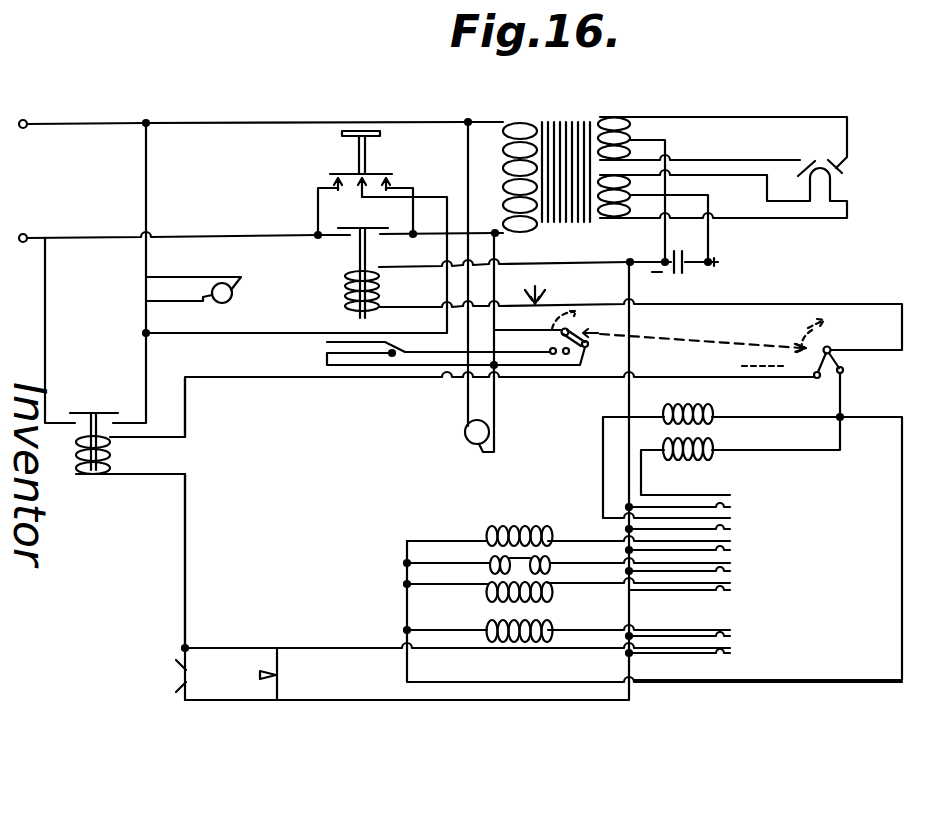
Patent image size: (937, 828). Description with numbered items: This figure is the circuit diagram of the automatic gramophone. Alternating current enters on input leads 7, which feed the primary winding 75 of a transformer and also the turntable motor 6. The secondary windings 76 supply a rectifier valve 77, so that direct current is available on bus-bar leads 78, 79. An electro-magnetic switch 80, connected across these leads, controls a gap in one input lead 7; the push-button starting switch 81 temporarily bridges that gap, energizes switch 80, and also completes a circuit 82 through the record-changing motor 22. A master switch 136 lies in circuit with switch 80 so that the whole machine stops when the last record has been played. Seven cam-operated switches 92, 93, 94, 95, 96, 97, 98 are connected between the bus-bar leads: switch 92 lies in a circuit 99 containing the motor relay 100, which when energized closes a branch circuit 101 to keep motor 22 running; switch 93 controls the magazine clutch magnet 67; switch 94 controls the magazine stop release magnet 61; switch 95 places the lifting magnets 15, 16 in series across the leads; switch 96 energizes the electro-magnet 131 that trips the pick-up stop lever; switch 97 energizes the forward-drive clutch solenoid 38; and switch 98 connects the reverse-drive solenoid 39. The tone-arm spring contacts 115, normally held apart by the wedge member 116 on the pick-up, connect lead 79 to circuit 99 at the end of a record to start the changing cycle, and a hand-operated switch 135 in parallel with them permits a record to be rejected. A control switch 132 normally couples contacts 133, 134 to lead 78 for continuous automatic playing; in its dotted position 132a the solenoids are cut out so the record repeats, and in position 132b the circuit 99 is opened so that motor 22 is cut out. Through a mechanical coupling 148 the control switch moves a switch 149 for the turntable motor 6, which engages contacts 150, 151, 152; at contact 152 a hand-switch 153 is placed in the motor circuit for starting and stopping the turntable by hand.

The electric motor 6 is at (464, 434).
The input leads 7 is at (255, 233).
The lifting magnet 15 is at (549, 559).
The lifting magnet 16 is at (484, 545).
The motor 22 is at (233, 297).
The forward-drive clutch solenoid 38 is at (685, 406).
The reverse-drive solenoid 39 is at (677, 461).
The magazine stop release magnet 61 is at (551, 596).
The magazine clutch magnet 67 is at (490, 625).
The primary winding 75 is at (533, 124).
The secondary windings 76 is at (611, 118).
The rectifier valve 77 is at (836, 188).
The bus-bar lead 78 is at (708, 281).
The bus-bar lead 79 is at (625, 398).
The electro-magnetic switch 80 is at (348, 276).
The push-button starting switch 81 is at (357, 154).
The circuit 82 is at (204, 336).
The cam-operated switch 92 is at (725, 653).
The cam-operated switch 93 is at (725, 636).
The cam-operated switch 94 is at (730, 590).
The cam-operated switch 95 is at (725, 571).
The cam-operated switch 96 is at (725, 550).
The switch 97 is at (725, 529).
The switch 98 is at (727, 507).
The circuit 99 is at (186, 562).
The electromagnetic relay 100 is at (76, 455).
The branch circuit 101 is at (146, 357).
The spring contacts 115 is at (280, 677).
The wedge member 116 is at (259, 675).
The electro-magnet 131 is at (516, 527).
The control switch 132 is at (846, 360).
The control switch position 132a is at (777, 350).
The control switch position 132b is at (797, 321).
The contact 133 is at (816, 377).
The contact 134 is at (845, 375).
The hand-operated switch 135 is at (176, 680).
The master switch 136 is at (546, 286).
The mechanical coupling 148 is at (703, 330).
The switch 149 is at (556, 337).
The contact 150 is at (590, 352).
The contact 151 is at (567, 355).
The contact 152 is at (551, 355).
The hand-switch 153 is at (434, 349).